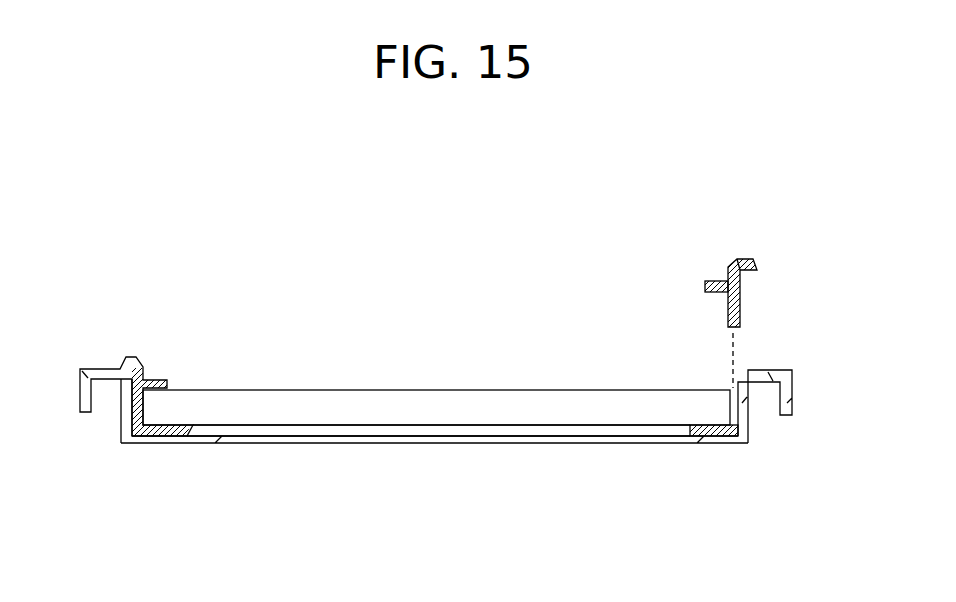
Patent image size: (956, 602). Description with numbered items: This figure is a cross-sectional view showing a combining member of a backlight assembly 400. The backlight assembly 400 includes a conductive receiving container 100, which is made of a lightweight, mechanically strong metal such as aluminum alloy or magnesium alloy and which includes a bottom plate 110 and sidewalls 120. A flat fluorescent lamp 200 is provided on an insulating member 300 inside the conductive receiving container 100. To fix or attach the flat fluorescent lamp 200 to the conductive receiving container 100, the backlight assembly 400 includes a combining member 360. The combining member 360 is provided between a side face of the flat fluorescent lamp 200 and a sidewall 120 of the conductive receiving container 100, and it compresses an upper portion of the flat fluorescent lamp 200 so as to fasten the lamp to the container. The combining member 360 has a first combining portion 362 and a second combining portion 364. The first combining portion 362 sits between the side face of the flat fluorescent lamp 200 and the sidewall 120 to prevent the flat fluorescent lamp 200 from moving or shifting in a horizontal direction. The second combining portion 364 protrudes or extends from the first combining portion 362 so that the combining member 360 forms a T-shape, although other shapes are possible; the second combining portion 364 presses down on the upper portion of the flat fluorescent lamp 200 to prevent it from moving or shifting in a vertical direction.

The conductive receiving container 100 is at (456, 456).
The bottom plate 110 is at (700, 447).
The sidewall 120 is at (748, 422).
The flat fluorescent lamp 200 is at (436, 390).
The insulating member 300 is at (155, 436).
The combining member 360 is at (745, 281).
The first combining portion 362 is at (735, 313).
The second combining portion 364 is at (718, 283).
The backlight assembly 400 is at (545, 268).